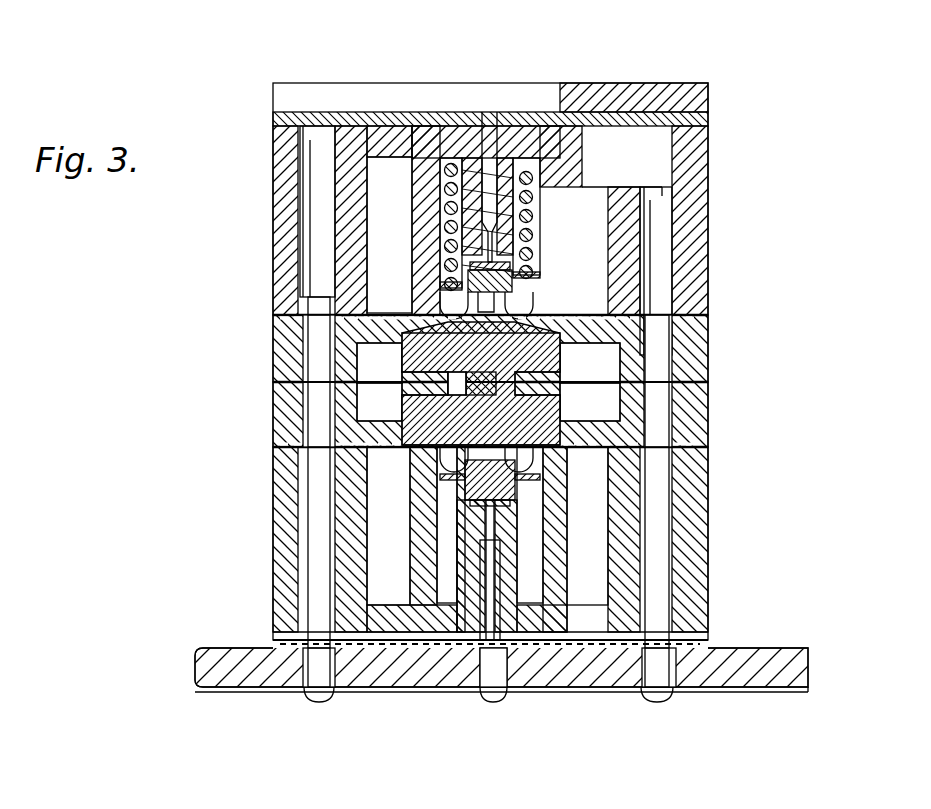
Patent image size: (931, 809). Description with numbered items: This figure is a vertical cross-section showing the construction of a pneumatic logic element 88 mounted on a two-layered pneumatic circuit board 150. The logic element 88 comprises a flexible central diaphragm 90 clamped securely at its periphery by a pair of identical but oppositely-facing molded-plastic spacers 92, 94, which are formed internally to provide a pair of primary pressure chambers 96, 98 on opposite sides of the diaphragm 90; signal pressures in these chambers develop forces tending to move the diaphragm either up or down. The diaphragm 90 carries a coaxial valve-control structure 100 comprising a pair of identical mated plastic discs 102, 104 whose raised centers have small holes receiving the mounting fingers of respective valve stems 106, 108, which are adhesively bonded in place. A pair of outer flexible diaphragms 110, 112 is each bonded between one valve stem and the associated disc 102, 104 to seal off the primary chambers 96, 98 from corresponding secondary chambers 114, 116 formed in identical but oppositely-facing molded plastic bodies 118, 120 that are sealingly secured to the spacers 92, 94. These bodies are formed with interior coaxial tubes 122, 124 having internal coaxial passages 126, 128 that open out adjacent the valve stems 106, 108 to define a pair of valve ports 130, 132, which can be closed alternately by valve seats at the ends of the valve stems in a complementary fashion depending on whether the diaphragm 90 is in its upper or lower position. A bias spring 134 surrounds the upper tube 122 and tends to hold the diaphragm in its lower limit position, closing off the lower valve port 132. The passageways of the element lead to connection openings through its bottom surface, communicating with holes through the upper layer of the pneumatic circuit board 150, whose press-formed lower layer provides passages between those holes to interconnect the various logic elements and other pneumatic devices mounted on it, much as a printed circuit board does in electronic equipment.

The logic element 88 is at (500, 66).
The flexible central diaphragm 90 is at (575, 383).
The molded-plastic spacer 92 is at (710, 343).
The molded-plastic spacer 94 is at (705, 420).
The primary pressure chamber 96 is at (440, 356).
The primary pressure chamber 98 is at (388, 414).
The valve-control structure 100 is at (445, 348).
The plastic disc 102 is at (545, 345).
The plastic disc 104 is at (540, 418).
The valve stem 106 is at (515, 290).
The valve stem 108 is at (520, 470).
The outer flexible diaphragm 110 is at (500, 312).
The outer flexible diaphragm 112 is at (455, 422).
The secondary chamber 114 is at (407, 292).
The secondary chamber 116 is at (445, 460).
The molded plastic body 118 is at (705, 226).
The molded plastic body 120 is at (705, 526).
The interior coaxial tube 122 is at (500, 245).
The interior coaxial tube 124 is at (522, 540).
The internal coaxial passage 126 is at (517, 117).
The internal coaxial passage 128 is at (480, 590).
The valve port 130 is at (505, 263).
The valve port 132 is at (470, 505).
The bias spring 134 is at (530, 218).
The two-layered pneumatic circuit board 150 is at (226, 622).